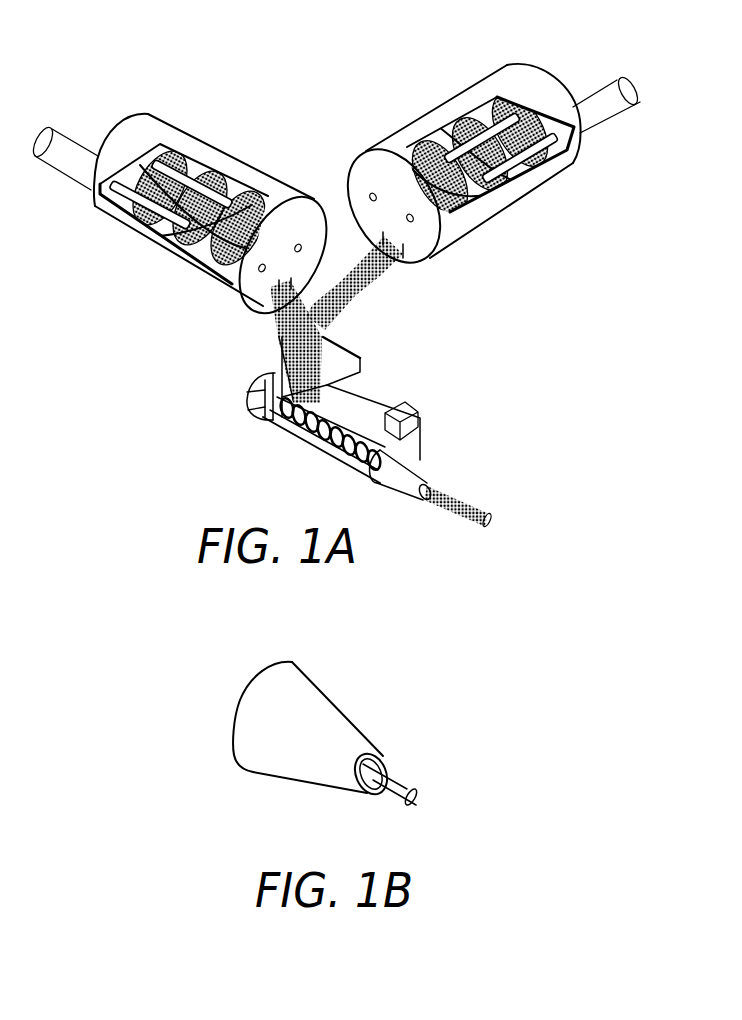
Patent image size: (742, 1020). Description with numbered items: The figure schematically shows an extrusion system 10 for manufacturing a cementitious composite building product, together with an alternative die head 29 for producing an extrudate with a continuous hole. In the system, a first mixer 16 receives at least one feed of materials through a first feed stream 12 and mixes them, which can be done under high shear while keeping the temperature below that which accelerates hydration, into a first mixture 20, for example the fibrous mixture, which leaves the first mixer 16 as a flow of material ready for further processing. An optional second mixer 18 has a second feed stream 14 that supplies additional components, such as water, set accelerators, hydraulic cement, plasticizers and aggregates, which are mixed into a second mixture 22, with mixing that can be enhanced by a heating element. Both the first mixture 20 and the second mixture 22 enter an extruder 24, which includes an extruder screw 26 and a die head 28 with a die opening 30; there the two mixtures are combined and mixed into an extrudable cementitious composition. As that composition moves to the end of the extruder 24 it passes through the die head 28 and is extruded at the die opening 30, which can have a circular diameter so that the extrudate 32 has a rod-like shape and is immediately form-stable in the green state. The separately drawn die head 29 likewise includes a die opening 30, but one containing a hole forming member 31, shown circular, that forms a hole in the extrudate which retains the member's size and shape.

In FIG. 1A, the extrusion system 10 is at (309, 95).
In FIG. 1A, the first feed stream 12 is at (67, 170).
In FIG. 1A, the second feed stream 14 is at (620, 110).
In FIG. 1A, the first mixer 16 is at (97, 207).
In FIG. 1A, the second mixer 18 is at (575, 158).
In FIG. 1A, the first mixture 20 is at (276, 304).
In FIG. 1A, the second mixture 22 is at (398, 261).
In FIG. 1A, the extruder 24 is at (357, 400).
In FIG. 1A, the extruder screw 26 is at (267, 417).
In FIG. 1A, the die head 28 is at (417, 473).
In FIG. 1B, the die head 29 is at (332, 718).
In FIG. 1A, the die opening 30 is at (433, 480).
In FIG. 1B, the die opening 30 is at (367, 797).
In FIG. 1B, the hole forming member 31 is at (397, 793).
In FIG. 1A, the extrudate 32 is at (470, 500).